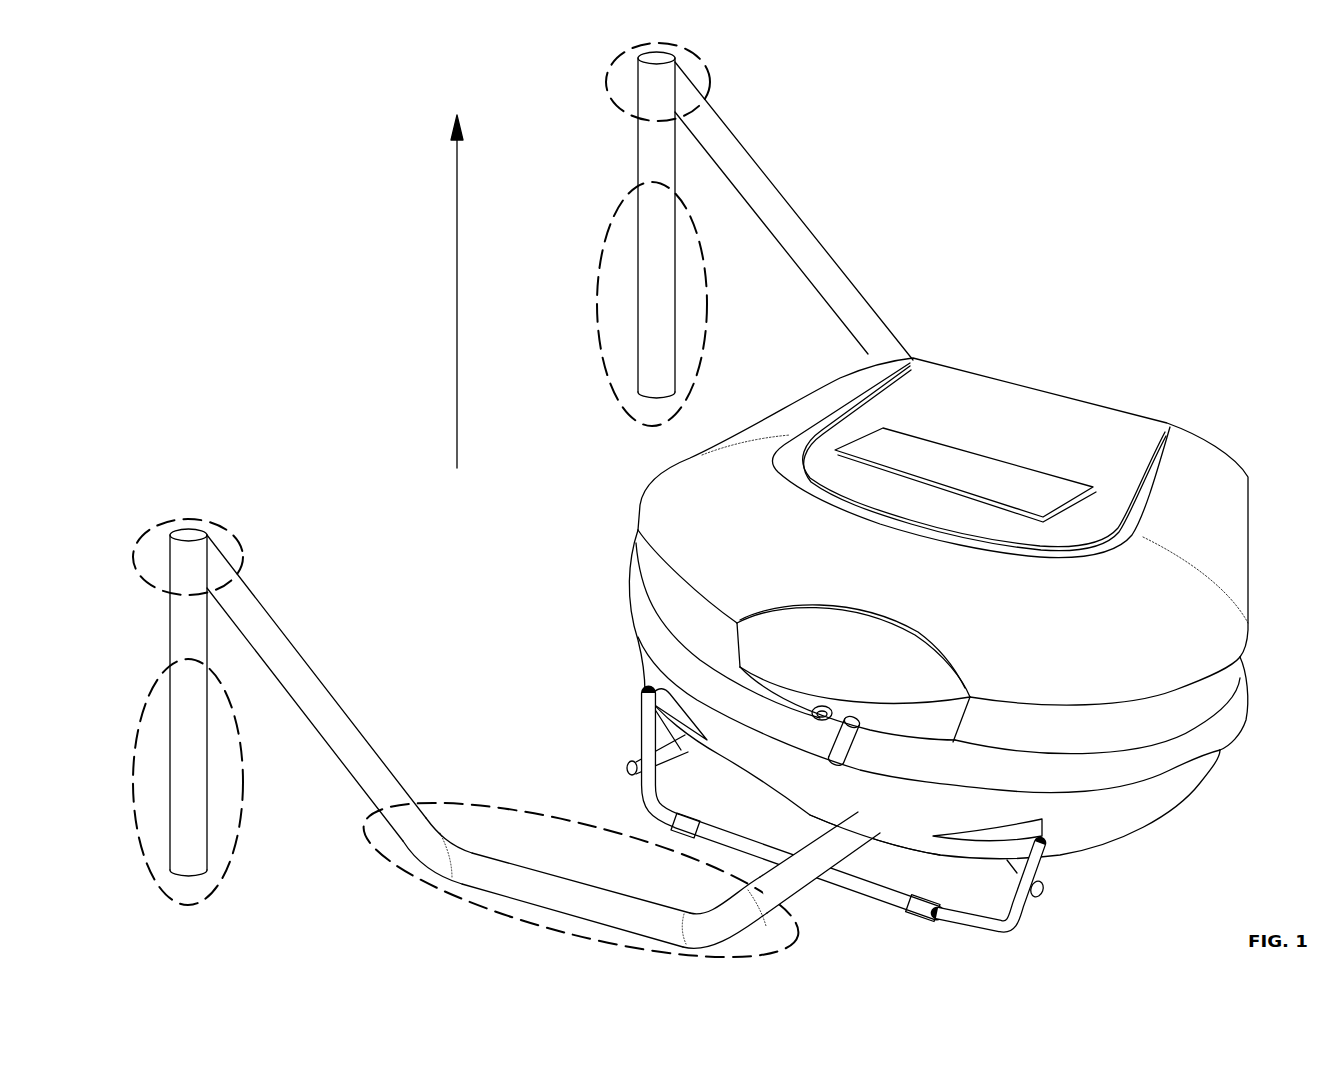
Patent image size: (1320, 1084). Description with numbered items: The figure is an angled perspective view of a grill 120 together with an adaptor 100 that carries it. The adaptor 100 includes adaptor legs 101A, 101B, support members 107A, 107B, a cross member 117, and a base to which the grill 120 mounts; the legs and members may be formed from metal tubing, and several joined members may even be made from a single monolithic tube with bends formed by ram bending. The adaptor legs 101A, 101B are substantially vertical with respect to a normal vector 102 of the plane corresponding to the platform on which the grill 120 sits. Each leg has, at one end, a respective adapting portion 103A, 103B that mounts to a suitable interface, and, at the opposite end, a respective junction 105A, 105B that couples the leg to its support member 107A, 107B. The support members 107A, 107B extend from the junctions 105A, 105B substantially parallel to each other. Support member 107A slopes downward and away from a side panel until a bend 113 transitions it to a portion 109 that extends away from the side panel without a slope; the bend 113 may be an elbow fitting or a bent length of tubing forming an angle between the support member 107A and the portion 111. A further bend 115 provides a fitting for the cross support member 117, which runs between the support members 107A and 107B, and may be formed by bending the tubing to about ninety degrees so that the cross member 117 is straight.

The adaptor 100 is at (838, 168).
The adaptor leg 101A is at (175, 641).
The adaptor leg 101B is at (648, 150).
The normal vector 102 is at (458, 246).
The adapting portion 103A is at (220, 877).
The adapting portion 103B is at (598, 310).
The junction 105A is at (187, 520).
The junction 105B is at (713, 95).
The support member 107A is at (308, 674).
The support member 107B is at (826, 255).
The portion 109 is at (540, 812).
The portion of the support member 111 is at (530, 897).
The bend 113 is at (422, 850).
The bend 115 is at (737, 935).
The cross member 117 is at (800, 887).
The grill 120 is at (1200, 492).